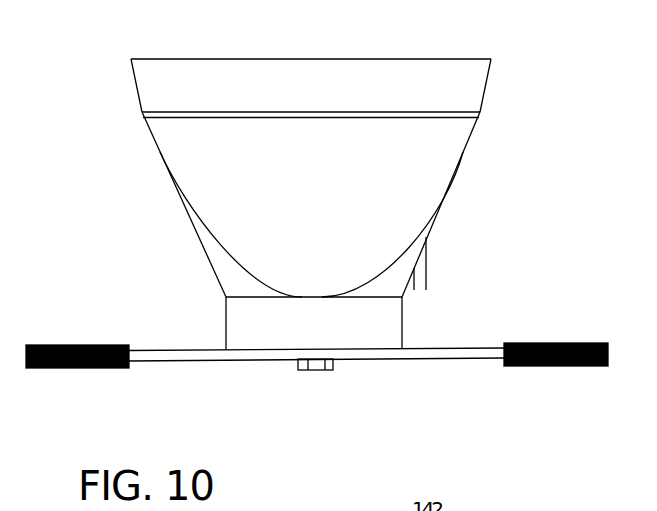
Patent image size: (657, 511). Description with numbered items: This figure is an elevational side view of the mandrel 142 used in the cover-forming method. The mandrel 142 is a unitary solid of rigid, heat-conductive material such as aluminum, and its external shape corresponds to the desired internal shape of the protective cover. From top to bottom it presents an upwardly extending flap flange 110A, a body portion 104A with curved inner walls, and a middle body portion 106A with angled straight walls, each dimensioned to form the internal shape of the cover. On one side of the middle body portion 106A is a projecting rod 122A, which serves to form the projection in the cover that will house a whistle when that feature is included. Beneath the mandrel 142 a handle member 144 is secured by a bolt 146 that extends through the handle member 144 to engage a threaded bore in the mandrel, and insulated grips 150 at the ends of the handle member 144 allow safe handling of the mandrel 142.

The mandrel 142 is at (260, 85).
The upwardly extending flap flange 110A is at (407, 65).
The middle body portion 106A is at (447, 192).
The body portion 104A is at (235, 264).
The projecting rod 122A is at (425, 259).
The handle member 144 is at (472, 347).
The bolt 146 is at (317, 370).
The insulated grips 150 is at (105, 368).